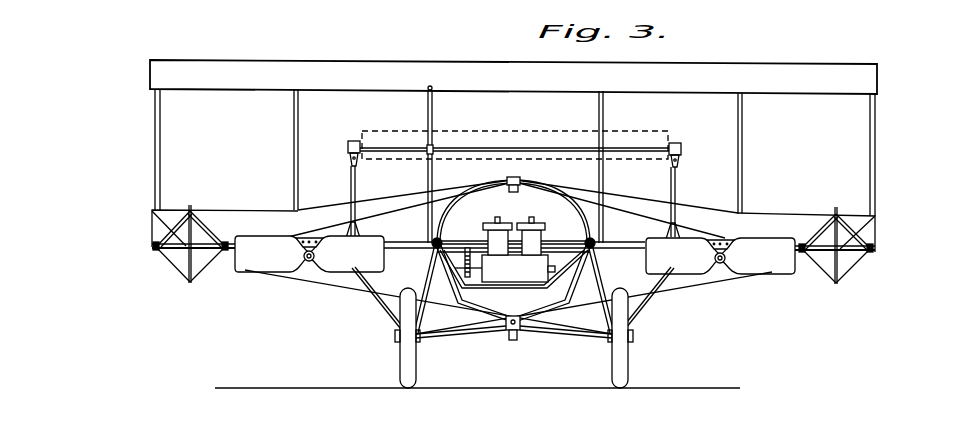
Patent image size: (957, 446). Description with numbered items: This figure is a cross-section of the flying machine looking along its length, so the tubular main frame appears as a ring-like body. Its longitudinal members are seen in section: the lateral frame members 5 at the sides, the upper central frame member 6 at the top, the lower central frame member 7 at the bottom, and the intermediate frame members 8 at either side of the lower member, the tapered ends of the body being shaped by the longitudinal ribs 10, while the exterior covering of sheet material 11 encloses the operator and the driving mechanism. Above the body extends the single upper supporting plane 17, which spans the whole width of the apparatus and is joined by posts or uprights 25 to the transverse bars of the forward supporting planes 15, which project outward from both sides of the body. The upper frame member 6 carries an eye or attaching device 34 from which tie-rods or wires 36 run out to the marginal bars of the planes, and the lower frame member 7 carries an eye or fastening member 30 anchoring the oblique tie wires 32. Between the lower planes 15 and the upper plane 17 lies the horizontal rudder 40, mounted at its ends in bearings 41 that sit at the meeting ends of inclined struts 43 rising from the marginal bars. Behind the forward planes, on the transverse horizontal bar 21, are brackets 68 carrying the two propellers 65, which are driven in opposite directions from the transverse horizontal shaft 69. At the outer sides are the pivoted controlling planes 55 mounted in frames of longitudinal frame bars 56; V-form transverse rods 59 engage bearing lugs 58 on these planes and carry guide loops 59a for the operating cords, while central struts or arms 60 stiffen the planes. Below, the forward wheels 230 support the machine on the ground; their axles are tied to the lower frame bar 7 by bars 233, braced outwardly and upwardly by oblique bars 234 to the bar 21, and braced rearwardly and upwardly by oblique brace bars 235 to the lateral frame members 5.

The upper supporting plane 17 is at (706, 63).
The post or upright 25 is at (157, 115).
The forward supporting plane 15 is at (148, 222).
The horizontal rudder 40 is at (397, 147).
The bearing 41 is at (353, 140).
The inclined strut or brace 43 is at (351, 170).
The tie-rod or wire 36 is at (380, 197).
The exterior covering of sheet material 11 is at (472, 191).
The eye or attaching device 34 is at (517, 178).
The upper central longitudinal frame member 6 is at (522, 182).
The transversely arranged rod 59 is at (177, 220).
The guide loop or eye 59a is at (192, 207).
The controlling plane 55 is at (165, 258).
The longitudinal frame bar 56 is at (157, 247).
The strut or arm 60 is at (182, 262).
The bearing ear or lug 58 is at (157, 233).
The transverse horizontal shaft 69 is at (621, 252).
The propeller 65 is at (515, 255).
The bracket 68 is at (298, 238).
The intermediate frame member 8 is at (555, 302).
The transverse horizontal bar 21 is at (488, 237).
The longitudinally extending rib 10 is at (470, 240).
The lateral longitudinal frame member 5 is at (441, 240).
The oblique brace bar 235 is at (433, 280).
The oblique bar 234 is at (372, 293).
The tie rod or wire 32 is at (330, 283).
The bar 233 is at (456, 336).
The eye or fastening member 30 is at (512, 332).
The lower central frame member 7 is at (519, 338).
The forward wheel 230 is at (398, 355).